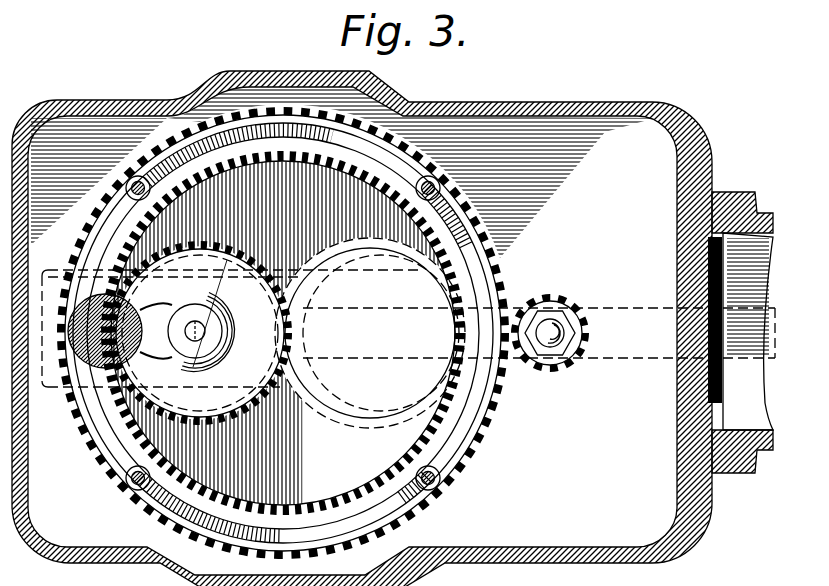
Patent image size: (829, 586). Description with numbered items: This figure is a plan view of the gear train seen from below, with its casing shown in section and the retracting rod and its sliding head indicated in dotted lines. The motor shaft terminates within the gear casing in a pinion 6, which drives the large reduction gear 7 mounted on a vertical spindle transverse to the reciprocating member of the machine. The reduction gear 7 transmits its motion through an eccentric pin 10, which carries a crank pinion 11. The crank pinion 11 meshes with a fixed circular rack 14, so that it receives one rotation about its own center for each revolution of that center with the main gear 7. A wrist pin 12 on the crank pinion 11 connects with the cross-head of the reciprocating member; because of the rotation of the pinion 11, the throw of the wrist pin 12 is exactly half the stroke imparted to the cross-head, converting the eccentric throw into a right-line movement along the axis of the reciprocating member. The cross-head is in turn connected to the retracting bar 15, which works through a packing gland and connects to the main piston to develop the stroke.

The pinion 6 is at (548, 298).
The reduction gear 7 is at (483, 275).
The eccentric pin 10 is at (201, 315).
The crank pinion 11 is at (212, 257).
The wrist pin 12 is at (80, 388).
The fixed circular rack 14 is at (456, 403).
The retracting bar 15 is at (598, 358).